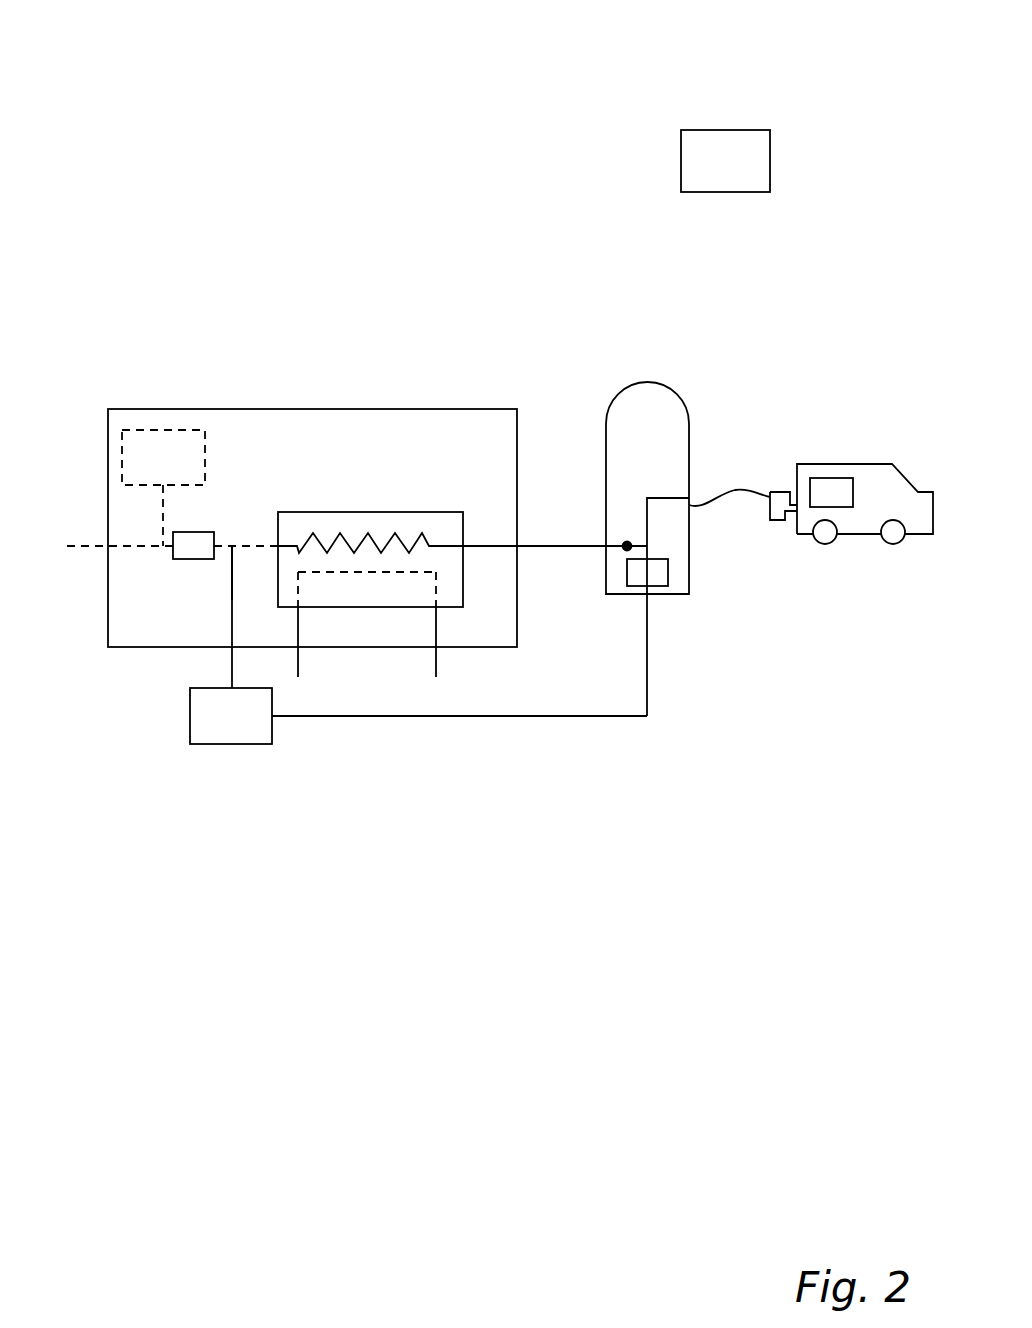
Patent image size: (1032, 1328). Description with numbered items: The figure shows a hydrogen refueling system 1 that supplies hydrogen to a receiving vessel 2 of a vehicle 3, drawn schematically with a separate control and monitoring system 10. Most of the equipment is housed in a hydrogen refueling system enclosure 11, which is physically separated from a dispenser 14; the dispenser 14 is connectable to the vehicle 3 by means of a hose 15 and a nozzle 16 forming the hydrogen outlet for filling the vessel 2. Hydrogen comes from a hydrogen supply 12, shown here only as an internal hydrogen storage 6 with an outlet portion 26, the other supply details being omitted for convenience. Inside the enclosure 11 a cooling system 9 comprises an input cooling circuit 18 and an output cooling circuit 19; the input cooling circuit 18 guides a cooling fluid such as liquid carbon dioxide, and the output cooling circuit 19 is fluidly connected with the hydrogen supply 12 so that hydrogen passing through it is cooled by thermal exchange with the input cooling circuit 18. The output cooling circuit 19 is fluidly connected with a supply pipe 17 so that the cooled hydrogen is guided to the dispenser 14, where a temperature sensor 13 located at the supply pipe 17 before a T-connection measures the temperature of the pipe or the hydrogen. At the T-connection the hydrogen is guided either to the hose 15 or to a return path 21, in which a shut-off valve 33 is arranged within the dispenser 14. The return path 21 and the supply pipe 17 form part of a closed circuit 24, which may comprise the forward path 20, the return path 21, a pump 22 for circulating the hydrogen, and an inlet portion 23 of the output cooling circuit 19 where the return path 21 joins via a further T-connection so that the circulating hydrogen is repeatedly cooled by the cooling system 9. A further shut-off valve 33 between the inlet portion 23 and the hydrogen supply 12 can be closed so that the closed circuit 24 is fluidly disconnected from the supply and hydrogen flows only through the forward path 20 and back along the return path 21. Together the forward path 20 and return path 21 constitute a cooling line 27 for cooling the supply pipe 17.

The hydrogen refueling system 1 is at (160, 103).
The receiving vessel 2 is at (830, 478).
The vehicle 3 is at (900, 470).
The internal hydrogen storage 6 is at (163, 430).
The cooling system 9 is at (447, 512).
The control and monitoring system 10 is at (681, 157).
The hydrogen refueling system enclosure 11 is at (395, 409).
The hydrogen supply 12 is at (82, 546).
The temperature sensor 13 is at (627, 546).
The dispenser 14 is at (680, 392).
The hose 15 is at (735, 490).
The nozzle 16 is at (772, 520).
The supply pipe 17 is at (547, 546).
The input cooling circuit 18 is at (436, 662).
The output cooling circuit 19 is at (362, 535).
The forward path 20 is at (547, 546).
The return path 21 is at (559, 716).
The pump 22 is at (228, 744).
The inlet portion 23 is at (250, 546).
The closed circuit 24 is at (648, 695).
The outlet portion of the hydrogen supply 26 is at (226, 548).
The cooling line 27 is at (677, 663).
The shut-off valve 33 is at (176, 560).